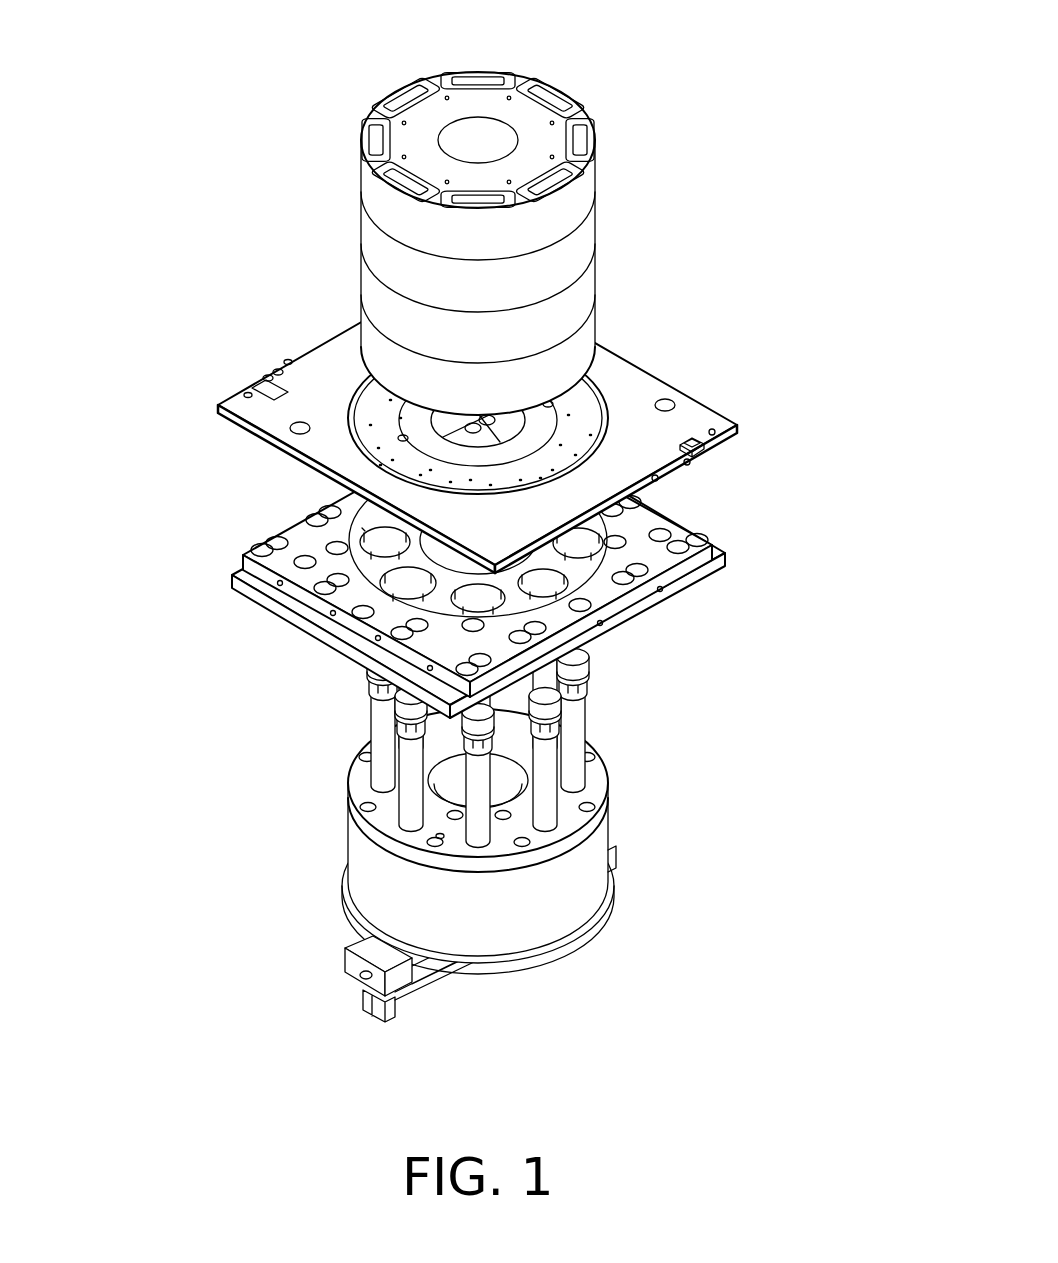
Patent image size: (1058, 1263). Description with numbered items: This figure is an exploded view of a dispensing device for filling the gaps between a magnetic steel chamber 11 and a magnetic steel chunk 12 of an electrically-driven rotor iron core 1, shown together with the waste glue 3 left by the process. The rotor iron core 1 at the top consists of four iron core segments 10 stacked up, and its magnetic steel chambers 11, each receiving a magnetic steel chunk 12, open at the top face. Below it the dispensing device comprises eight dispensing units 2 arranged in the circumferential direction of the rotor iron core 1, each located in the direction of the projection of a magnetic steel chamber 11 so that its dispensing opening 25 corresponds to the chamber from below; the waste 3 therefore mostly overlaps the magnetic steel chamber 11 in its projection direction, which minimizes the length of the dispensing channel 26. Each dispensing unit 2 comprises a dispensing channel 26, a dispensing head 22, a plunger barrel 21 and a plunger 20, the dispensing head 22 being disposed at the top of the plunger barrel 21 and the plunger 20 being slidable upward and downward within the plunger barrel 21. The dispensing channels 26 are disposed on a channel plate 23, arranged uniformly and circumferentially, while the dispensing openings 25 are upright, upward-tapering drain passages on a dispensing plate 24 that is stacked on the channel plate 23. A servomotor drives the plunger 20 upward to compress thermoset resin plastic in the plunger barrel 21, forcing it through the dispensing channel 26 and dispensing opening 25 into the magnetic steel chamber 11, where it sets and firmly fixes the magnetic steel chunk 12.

The electrically-driven rotor iron core 1 is at (512, 296).
The iron core segment 10 is at (572, 217).
The magnetic steel chamber 11 is at (593, 137).
The magnetic steel chunk 12 is at (580, 117).
The dispensing unit 2 is at (426, 720).
The plunger 20 is at (573, 745).
The plunger barrel 21 is at (553, 670).
The dispensing head 22 is at (587, 698).
The channel plate 23 is at (257, 550).
The dispensing plate 24 is at (690, 415).
The dispensing opening 25 is at (367, 430).
The dispensing channel 26 is at (605, 530).
The waste 3 is at (607, 543).